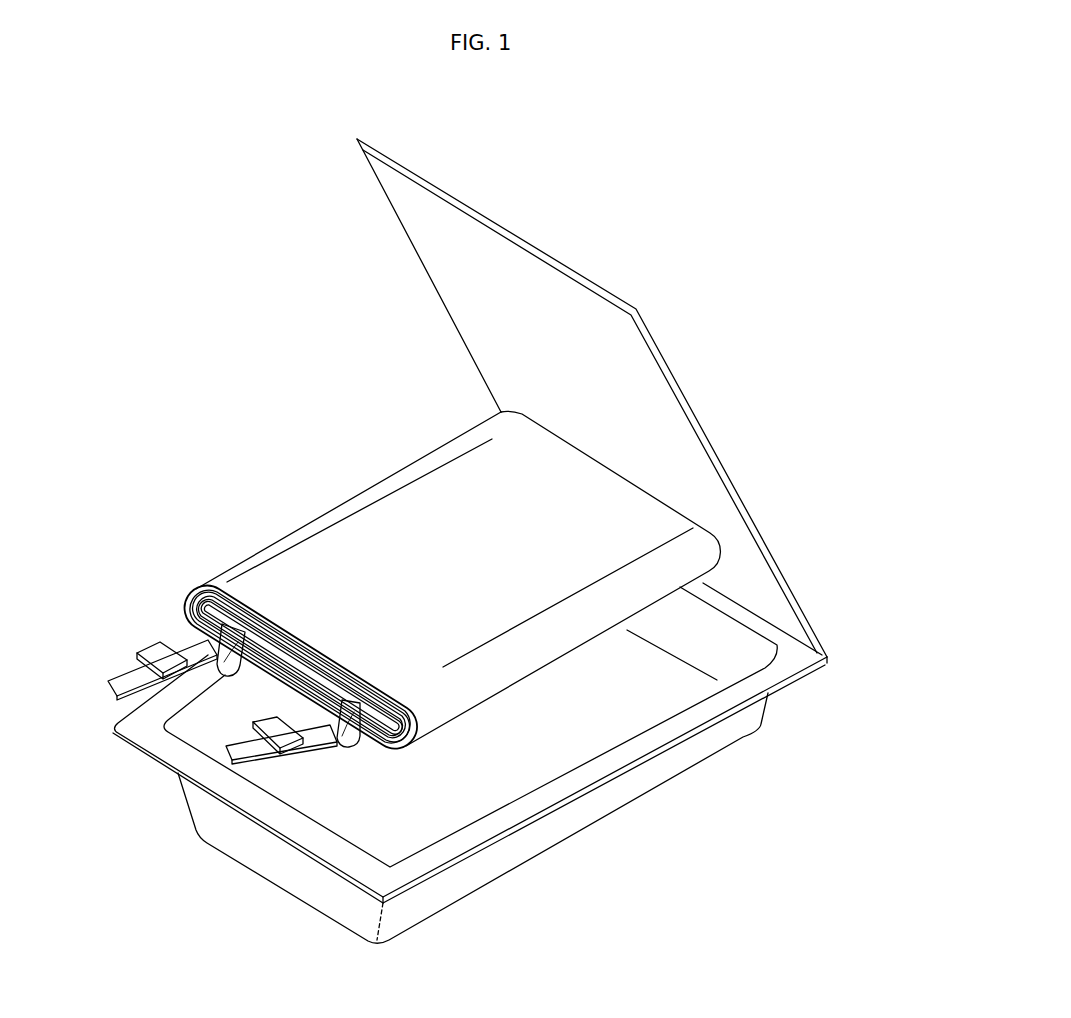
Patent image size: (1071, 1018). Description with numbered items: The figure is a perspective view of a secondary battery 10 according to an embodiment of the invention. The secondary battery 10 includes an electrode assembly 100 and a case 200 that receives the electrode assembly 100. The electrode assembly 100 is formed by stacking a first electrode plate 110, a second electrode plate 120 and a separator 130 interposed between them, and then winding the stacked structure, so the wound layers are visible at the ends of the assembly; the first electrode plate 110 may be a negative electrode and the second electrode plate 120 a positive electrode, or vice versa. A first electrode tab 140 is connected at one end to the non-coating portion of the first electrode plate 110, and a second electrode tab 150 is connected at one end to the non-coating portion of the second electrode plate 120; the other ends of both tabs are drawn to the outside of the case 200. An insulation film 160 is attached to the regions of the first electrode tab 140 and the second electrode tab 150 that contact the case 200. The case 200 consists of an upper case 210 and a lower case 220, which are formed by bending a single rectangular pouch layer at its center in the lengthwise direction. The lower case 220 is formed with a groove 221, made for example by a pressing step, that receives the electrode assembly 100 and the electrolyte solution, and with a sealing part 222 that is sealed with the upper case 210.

The secondary battery 10 is at (80, 136).
The electrode assembly 100 is at (248, 490).
The first electrode plate 110 is at (198, 588).
The second electrode plate 120 is at (192, 614).
The separator 130 is at (188, 598).
The first electrode tab 140 is at (226, 655).
The second electrode tab 150 is at (353, 750).
The insulation film 160 is at (152, 656).
The case 200 is at (917, 660).
The upper case 210 is at (793, 627).
The lower case 220 is at (753, 712).
The groove 221 is at (522, 765).
The sealing part 222 is at (710, 718).